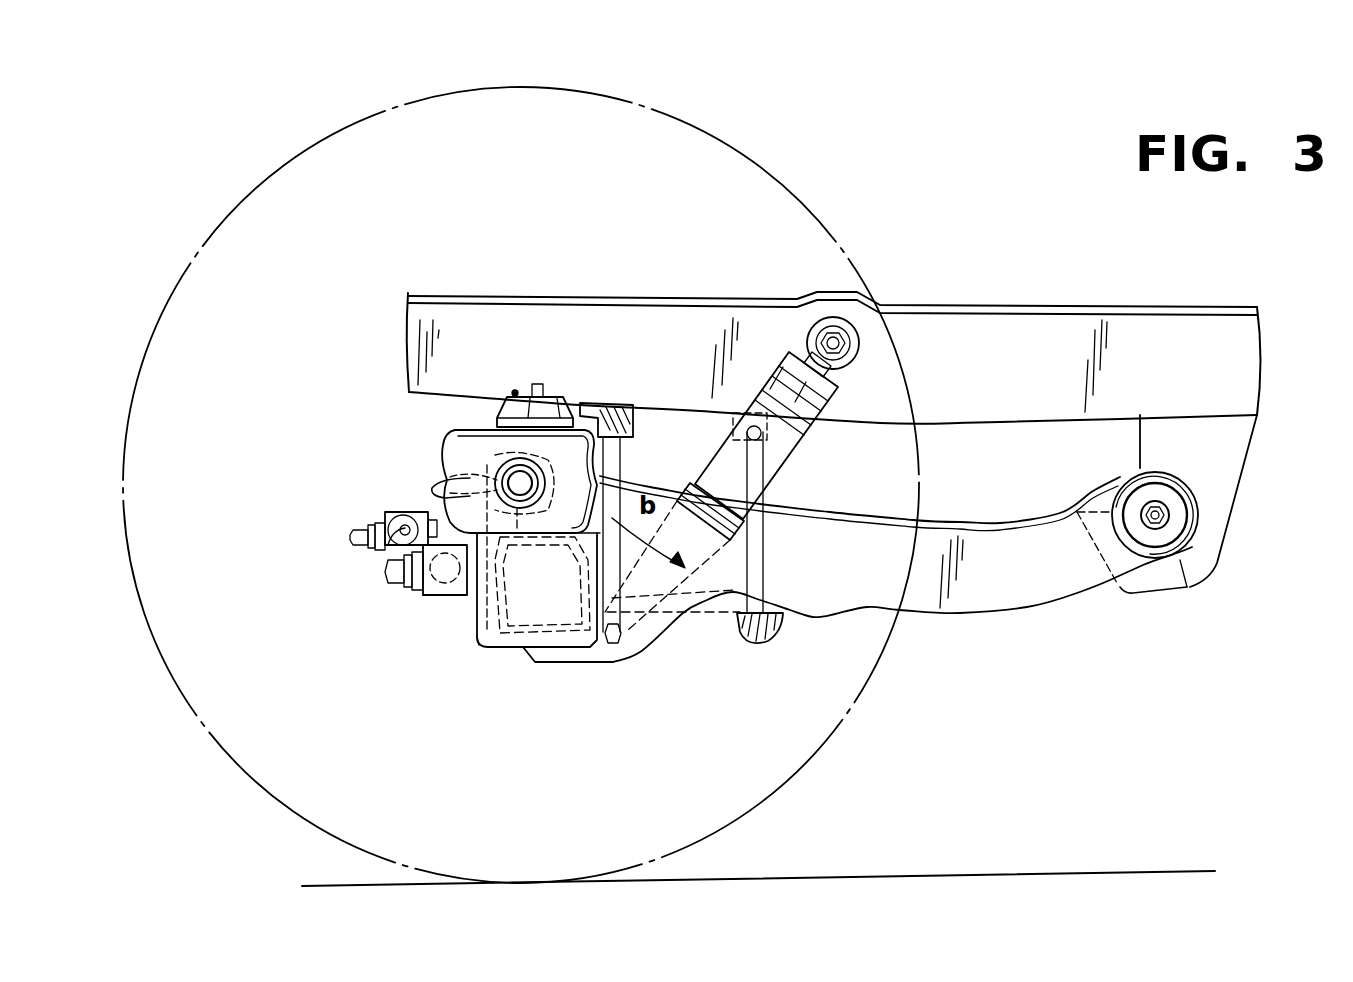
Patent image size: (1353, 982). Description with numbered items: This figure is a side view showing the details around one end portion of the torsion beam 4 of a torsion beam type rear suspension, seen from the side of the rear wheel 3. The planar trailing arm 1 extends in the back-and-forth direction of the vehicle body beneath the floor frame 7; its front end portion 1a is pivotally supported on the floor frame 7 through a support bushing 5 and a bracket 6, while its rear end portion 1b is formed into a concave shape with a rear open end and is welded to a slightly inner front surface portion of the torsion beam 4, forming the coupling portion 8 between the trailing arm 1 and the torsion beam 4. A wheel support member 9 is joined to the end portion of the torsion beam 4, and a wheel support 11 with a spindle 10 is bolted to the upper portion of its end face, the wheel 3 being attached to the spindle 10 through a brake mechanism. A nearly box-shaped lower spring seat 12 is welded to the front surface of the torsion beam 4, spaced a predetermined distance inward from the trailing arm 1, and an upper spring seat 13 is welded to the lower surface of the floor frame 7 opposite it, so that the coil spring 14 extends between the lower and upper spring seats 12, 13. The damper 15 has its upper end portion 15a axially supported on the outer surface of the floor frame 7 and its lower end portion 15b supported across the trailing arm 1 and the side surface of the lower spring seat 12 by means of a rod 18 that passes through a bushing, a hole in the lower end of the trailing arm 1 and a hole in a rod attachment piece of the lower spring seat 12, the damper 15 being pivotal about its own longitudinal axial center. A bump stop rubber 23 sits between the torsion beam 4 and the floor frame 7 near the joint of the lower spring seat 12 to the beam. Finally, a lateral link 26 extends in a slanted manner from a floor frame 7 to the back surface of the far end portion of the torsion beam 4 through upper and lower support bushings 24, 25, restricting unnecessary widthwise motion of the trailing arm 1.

The trailing arm 1 is at (985, 605).
The front end portion 1a is at (1187, 590).
The rear end portion 1b is at (455, 465).
The wheel 3 is at (195, 722).
The torsion beam 4 is at (487, 618).
The support bushing 5 is at (1177, 507).
The bracket 6 is at (1243, 475).
The floor frame 7 is at (988, 345).
The coupling portion 8 is at (580, 580).
The wheel support member 9 is at (497, 650).
The spindle 10 is at (505, 432).
The wheel support 11 is at (460, 488).
The lower spring seat 12 is at (757, 645).
The upper spring seat 13 is at (595, 405).
The coil spring 14 is at (764, 543).
The damper 15 is at (803, 458).
The upper end portion 15a is at (818, 325).
The lower end portion 15b is at (592, 632).
The rod 18 is at (615, 648).
The bump stop rubber 23 is at (515, 390).
The upper support bushing 24 is at (385, 521).
The lower support bushing 25 is at (440, 595).
The lateral link 26 is at (405, 538).